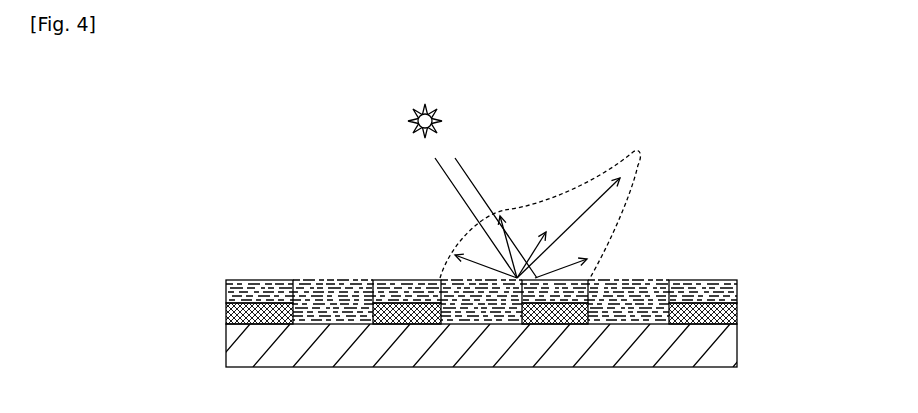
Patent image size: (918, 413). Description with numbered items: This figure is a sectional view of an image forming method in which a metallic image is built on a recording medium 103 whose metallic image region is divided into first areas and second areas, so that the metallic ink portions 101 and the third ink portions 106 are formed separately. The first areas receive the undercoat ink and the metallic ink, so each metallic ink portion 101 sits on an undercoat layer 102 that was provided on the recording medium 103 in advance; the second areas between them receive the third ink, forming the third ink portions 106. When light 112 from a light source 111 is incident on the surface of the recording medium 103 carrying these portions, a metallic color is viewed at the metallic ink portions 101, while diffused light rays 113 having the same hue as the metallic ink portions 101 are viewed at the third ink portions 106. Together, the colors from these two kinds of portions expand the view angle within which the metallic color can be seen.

The metallic ink portion 101 is at (723, 293).
The undercoat layer 102 is at (723, 310).
The recording medium 103 is at (723, 352).
The third ink portion 106 is at (336, 293).
The light source 111 is at (418, 104).
The incoming light rays 112 is at (461, 193).
The diffused light rays 113 is at (639, 170).